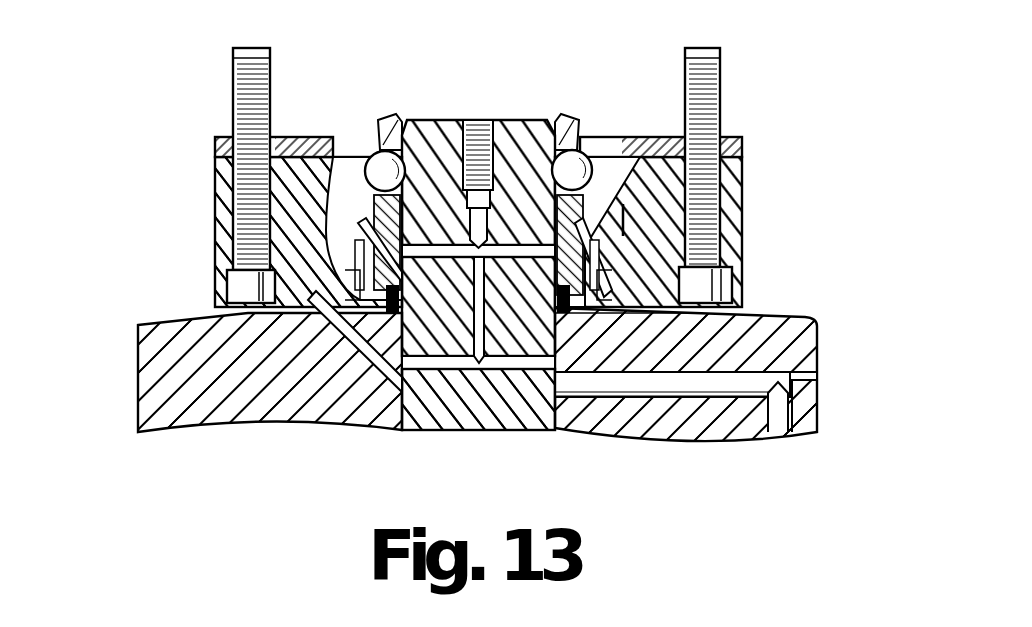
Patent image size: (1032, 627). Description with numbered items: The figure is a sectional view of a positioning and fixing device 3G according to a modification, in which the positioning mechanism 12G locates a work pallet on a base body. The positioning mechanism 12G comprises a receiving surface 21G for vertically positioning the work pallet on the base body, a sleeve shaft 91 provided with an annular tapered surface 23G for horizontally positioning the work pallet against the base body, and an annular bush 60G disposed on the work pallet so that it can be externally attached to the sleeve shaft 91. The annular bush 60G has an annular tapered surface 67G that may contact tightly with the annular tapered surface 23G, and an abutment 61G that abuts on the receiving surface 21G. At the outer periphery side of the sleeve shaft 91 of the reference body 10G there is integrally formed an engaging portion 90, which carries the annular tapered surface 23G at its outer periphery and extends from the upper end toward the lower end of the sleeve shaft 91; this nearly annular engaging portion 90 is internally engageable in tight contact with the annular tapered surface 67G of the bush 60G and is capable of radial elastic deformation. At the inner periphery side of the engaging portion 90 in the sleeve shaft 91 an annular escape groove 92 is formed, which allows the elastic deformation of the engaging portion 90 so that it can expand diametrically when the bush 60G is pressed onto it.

The positioning and fixing device 3G is at (767, 114).
The reference body 10G is at (136, 385).
The positioning mechanism 12G is at (622, 228).
The receiving surface 21G is at (685, 302).
The annular tapered surface 23G is at (345, 290).
The annular bush 60G is at (213, 196).
The abutment 61G is at (707, 312).
The annular tapered surface 67G is at (398, 140).
The engaging portion 90 is at (355, 290).
The sleeve shaft 91 is at (555, 220).
The annular escape groove 92 is at (586, 305).